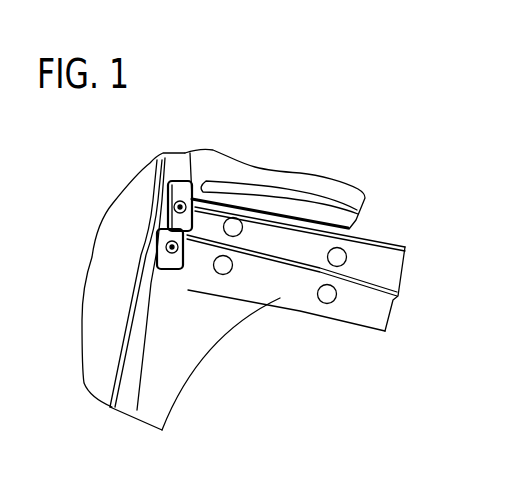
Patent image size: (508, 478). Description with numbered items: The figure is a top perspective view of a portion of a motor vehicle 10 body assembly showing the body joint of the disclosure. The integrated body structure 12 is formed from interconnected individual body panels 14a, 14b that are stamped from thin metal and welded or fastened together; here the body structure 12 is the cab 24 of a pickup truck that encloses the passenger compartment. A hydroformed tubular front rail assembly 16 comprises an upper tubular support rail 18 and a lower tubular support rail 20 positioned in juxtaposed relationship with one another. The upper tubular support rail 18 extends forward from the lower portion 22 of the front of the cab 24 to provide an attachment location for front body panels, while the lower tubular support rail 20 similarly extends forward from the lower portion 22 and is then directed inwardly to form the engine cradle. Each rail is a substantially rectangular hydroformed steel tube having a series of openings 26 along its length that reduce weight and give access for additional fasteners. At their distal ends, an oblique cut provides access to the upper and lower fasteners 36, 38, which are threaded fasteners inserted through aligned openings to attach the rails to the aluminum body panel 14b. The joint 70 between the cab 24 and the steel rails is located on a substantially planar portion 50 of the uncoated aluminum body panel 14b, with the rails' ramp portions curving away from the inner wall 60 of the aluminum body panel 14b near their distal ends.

The motor vehicle 10 is at (184, 96).
The body structure 12 is at (97, 306).
The body panel 14a is at (96, 391).
The aluminum body panel 14b is at (172, 380).
The front rail assembly 16 is at (373, 147).
The upper tubular support rail 18 is at (388, 261).
The lower tubular support rail 20 is at (384, 310).
The lower portion 22 is at (140, 203).
The cab 24 is at (106, 256).
The openings 26 is at (242, 225).
The upper fastener 36 is at (184, 195).
The lower fastener 38 is at (164, 278).
The planar portion 50 is at (193, 303).
The inner wall 60 is at (482, 472).
The joint 70 is at (123, 327).